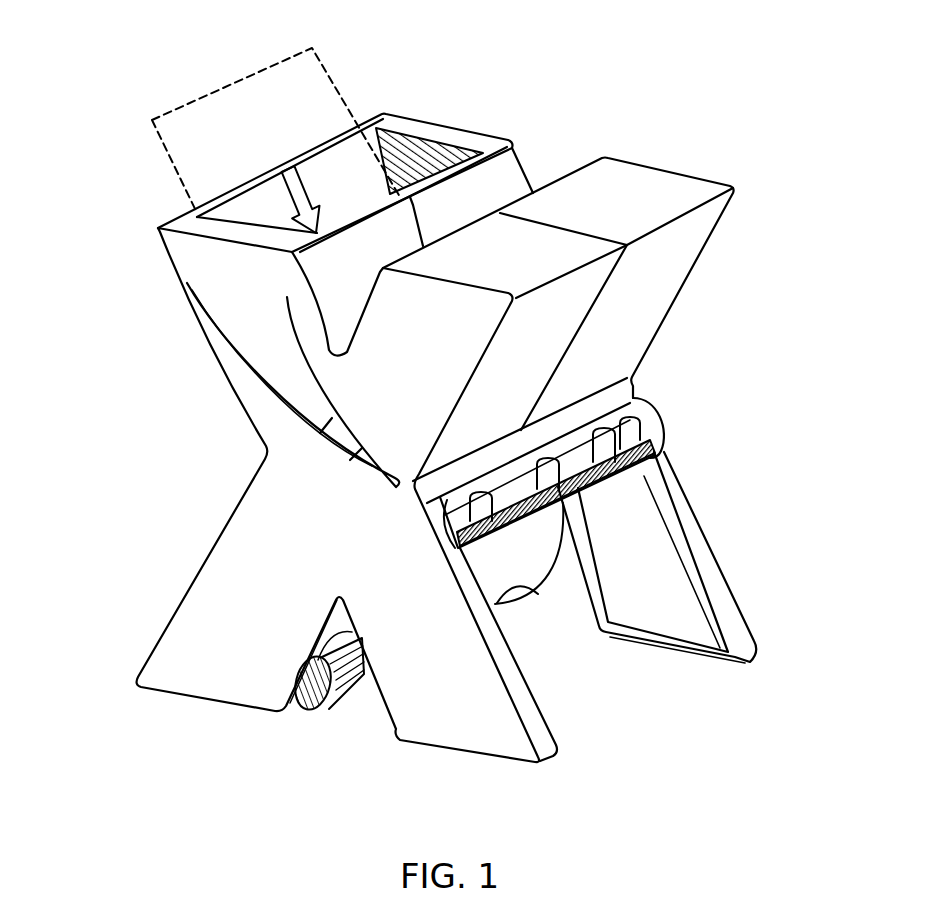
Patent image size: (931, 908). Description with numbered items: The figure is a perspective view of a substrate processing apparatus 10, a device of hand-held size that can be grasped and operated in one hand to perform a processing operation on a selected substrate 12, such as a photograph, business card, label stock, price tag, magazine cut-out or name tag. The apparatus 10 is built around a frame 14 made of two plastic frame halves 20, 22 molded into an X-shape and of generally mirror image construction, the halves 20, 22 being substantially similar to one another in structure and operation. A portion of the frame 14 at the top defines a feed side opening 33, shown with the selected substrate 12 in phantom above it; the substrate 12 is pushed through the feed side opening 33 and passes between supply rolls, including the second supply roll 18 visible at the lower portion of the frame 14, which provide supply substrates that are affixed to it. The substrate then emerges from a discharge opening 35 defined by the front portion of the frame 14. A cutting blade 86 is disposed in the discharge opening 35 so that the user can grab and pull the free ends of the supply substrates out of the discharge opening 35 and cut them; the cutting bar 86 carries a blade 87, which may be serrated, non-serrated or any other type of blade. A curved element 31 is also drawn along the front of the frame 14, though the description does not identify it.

The substrate processing apparatus 10 is at (135, 266).
The selected substrate 12 is at (327, 62).
The frame 14 is at (692, 169).
The second supply roll 18 is at (347, 694).
The frame half 20 is at (437, 753).
The frame half 22 is at (764, 626).
The handle 31 is at (353, 460).
The feed side opening 33 is at (348, 172).
The discharge opening 35 is at (540, 556).
The cutting blade 86 is at (663, 430).
The blade 87 is at (600, 490).